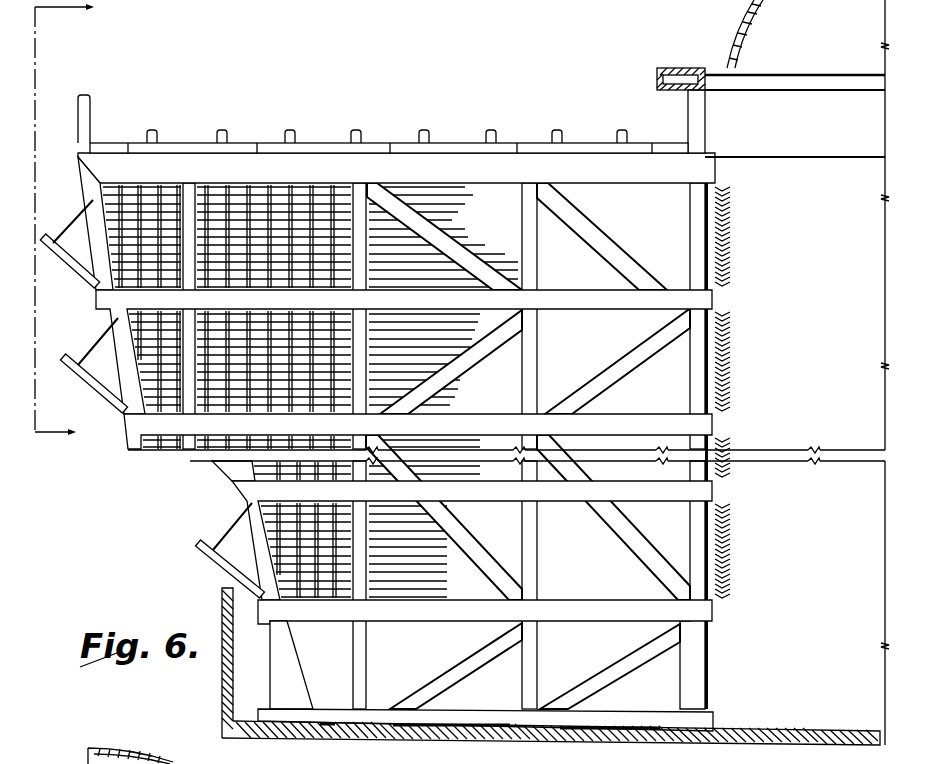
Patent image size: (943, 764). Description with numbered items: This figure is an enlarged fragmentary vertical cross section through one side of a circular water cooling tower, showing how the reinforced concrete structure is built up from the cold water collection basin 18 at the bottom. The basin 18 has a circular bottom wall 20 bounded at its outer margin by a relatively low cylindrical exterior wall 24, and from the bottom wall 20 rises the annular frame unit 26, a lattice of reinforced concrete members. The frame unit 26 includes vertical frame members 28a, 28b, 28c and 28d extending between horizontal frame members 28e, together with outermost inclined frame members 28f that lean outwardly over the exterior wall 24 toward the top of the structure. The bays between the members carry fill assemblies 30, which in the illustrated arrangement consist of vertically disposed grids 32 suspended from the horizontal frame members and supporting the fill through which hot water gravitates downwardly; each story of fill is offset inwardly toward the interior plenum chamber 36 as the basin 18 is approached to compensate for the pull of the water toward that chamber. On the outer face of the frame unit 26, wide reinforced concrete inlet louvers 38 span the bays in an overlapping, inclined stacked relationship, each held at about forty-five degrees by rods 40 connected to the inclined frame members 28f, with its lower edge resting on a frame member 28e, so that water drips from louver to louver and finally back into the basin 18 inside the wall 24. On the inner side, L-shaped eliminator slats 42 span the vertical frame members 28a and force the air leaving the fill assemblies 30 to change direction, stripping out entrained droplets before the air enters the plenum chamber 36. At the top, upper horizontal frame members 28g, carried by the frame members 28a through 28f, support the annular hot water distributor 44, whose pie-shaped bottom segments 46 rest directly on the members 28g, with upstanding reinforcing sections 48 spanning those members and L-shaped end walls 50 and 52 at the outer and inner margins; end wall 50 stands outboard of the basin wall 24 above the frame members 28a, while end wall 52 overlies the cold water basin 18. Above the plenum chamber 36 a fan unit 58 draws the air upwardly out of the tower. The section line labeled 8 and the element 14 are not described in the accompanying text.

The section line 8- 8 is at (77, 225).
The bottom structure 14 is at (177, 756).
The cold water collection basin 18 is at (428, 741).
The circular bottom wall 20 is at (528, 736).
The cylindrical exterior wall 24 is at (224, 691).
The annular frame unit 26 is at (712, 223).
The vertical frame member 28a is at (702, 551).
The vertical frame member 28b is at (525, 556).
The vertical frame member 28c is at (366, 360).
The vertical frame member 28d is at (190, 183).
The horizontal frame member 28e is at (410, 620).
The inclined frame member 28f is at (103, 252).
The upper horizontal frame member 28g is at (514, 163).
The fill assembly 30 is at (448, 232).
The grid 32 is at (228, 203).
The plenum chamber 36 is at (856, 343).
The inlet louver 38 is at (92, 383).
The rod 40 is at (92, 346).
The eliminator slat 42 is at (730, 322).
The hot water distributor 44 is at (375, 130).
The bottom segment 46 is at (467, 148).
The reinforcing section 48 is at (294, 132).
The end wall 50 is at (91, 114).
The end wall 52 is at (688, 113).
The fan unit 58 is at (740, 5).